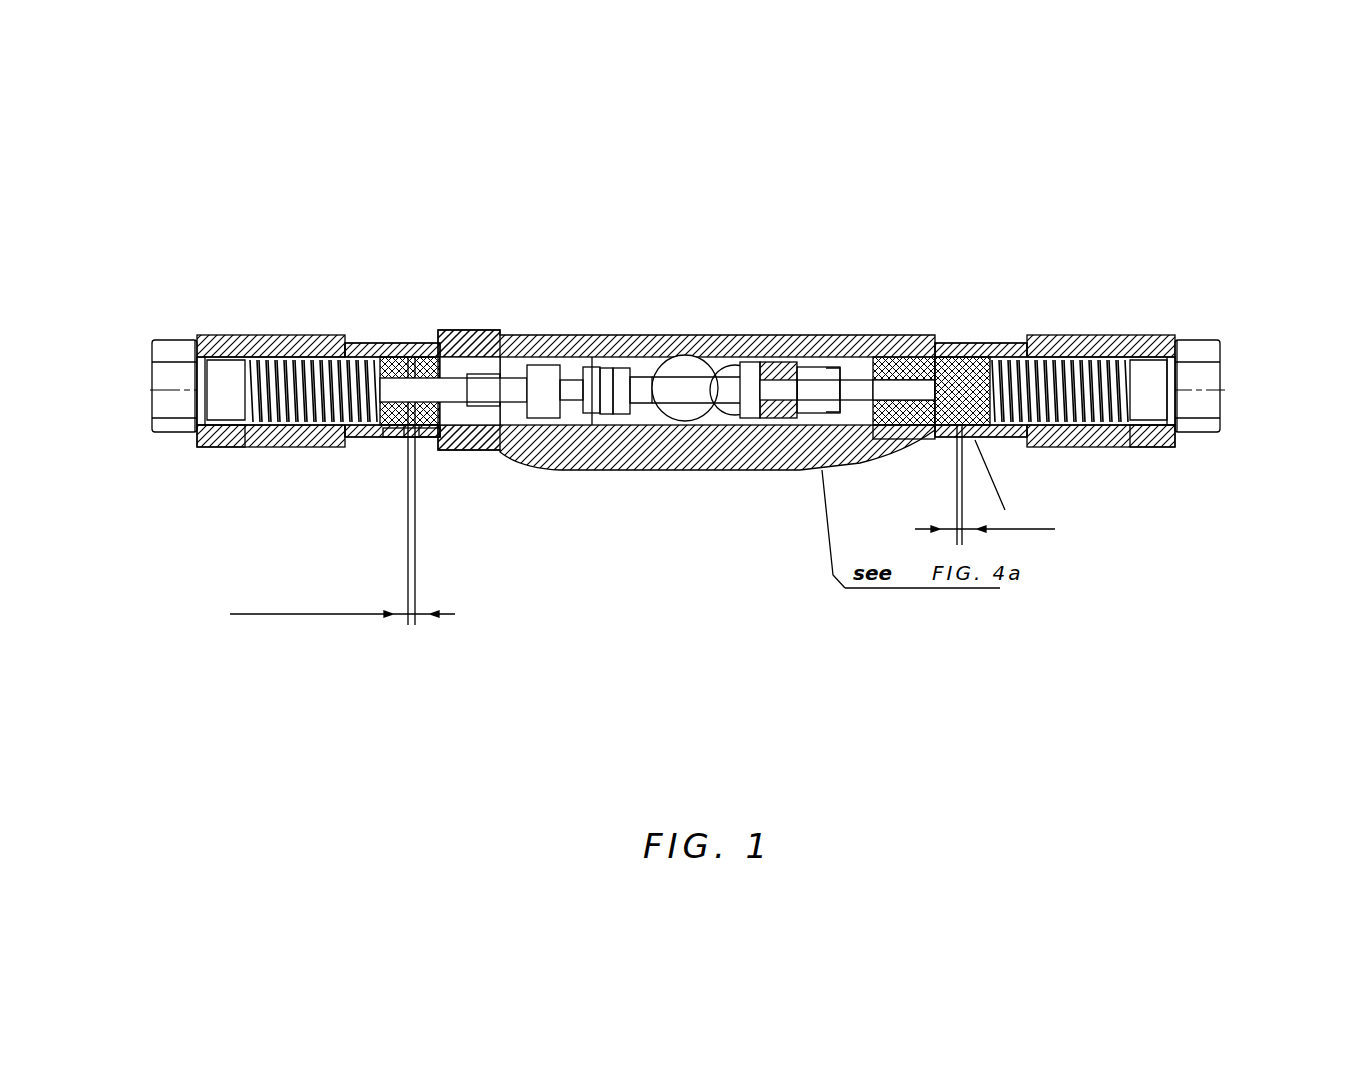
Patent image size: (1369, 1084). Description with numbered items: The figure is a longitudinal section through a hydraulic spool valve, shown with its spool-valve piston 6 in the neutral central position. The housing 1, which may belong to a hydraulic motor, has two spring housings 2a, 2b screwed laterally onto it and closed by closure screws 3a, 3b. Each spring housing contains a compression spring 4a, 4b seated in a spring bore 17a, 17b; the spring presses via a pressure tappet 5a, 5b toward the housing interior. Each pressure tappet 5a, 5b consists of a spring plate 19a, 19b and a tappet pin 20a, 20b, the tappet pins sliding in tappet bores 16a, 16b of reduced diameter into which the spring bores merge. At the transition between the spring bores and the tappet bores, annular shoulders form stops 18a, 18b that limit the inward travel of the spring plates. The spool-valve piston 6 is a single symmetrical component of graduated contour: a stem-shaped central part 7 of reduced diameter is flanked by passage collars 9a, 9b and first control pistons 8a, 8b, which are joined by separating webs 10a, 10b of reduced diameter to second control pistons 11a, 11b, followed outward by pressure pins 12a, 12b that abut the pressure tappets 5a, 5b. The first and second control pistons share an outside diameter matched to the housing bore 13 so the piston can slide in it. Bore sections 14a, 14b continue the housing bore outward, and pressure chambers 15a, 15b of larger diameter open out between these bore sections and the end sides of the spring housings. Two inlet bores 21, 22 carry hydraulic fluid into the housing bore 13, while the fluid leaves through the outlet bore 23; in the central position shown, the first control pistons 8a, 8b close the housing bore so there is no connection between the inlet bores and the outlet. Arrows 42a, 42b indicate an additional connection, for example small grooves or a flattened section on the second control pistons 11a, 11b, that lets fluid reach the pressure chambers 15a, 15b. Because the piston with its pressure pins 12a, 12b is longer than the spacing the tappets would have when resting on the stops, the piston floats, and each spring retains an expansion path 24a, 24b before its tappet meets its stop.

The housing 1 is at (937, 333).
The spring housing 2a is at (245, 333).
The spring housing 2b is at (1125, 325).
The closure screw 3a is at (148, 395).
The closure screw 3b is at (1227, 357).
The compression spring 4a is at (270, 390).
The compression spring 4b is at (1137, 440).
The pressure tappet 5a is at (330, 447).
The pressure tappet 5b is at (1035, 538).
The spool-valve piston 6 is at (427, 625).
The central part 7 is at (608, 415).
The first control piston 8a is at (517, 405).
The first control piston 8b is at (800, 412).
The passage collar 9a is at (565, 415).
The passage collar 9b is at (762, 412).
The separating web 10a is at (592, 345).
The separating web 10b is at (780, 347).
The second control piston 11a is at (557, 347).
The second control piston 11b is at (883, 331).
The pressure pin 12a is at (490, 333).
The pressure pin 12b is at (973, 343).
The housing bore 13 is at (650, 405).
The bore section 14a is at (410, 617).
The bore section 14b is at (838, 420).
The pressure chamber 15a is at (388, 437).
The pressure chamber 15b is at (882, 470).
The tappet bore 16a is at (418, 342).
The tappet bore 16b is at (1020, 337).
The spring bore 17a is at (245, 403).
The spring bore 17b is at (1080, 440).
The stop 18a is at (397, 343).
The stop 18b is at (975, 440).
The spring plate 19a is at (232, 447).
The spring plate 19b is at (1015, 440).
The tappet pin 20a is at (398, 447).
The tappet pin 20b is at (943, 440).
The inlet bore 21 is at (578, 330).
The inlet bore 22 is at (795, 331).
The outlet bore 23 is at (683, 350).
The expansion path 24a is at (342, 602).
The expansion path 24b is at (985, 486).
The arrow indicating additional connection 42a is at (693, 467).
The arrow indicating additional connection 42b is at (745, 470).